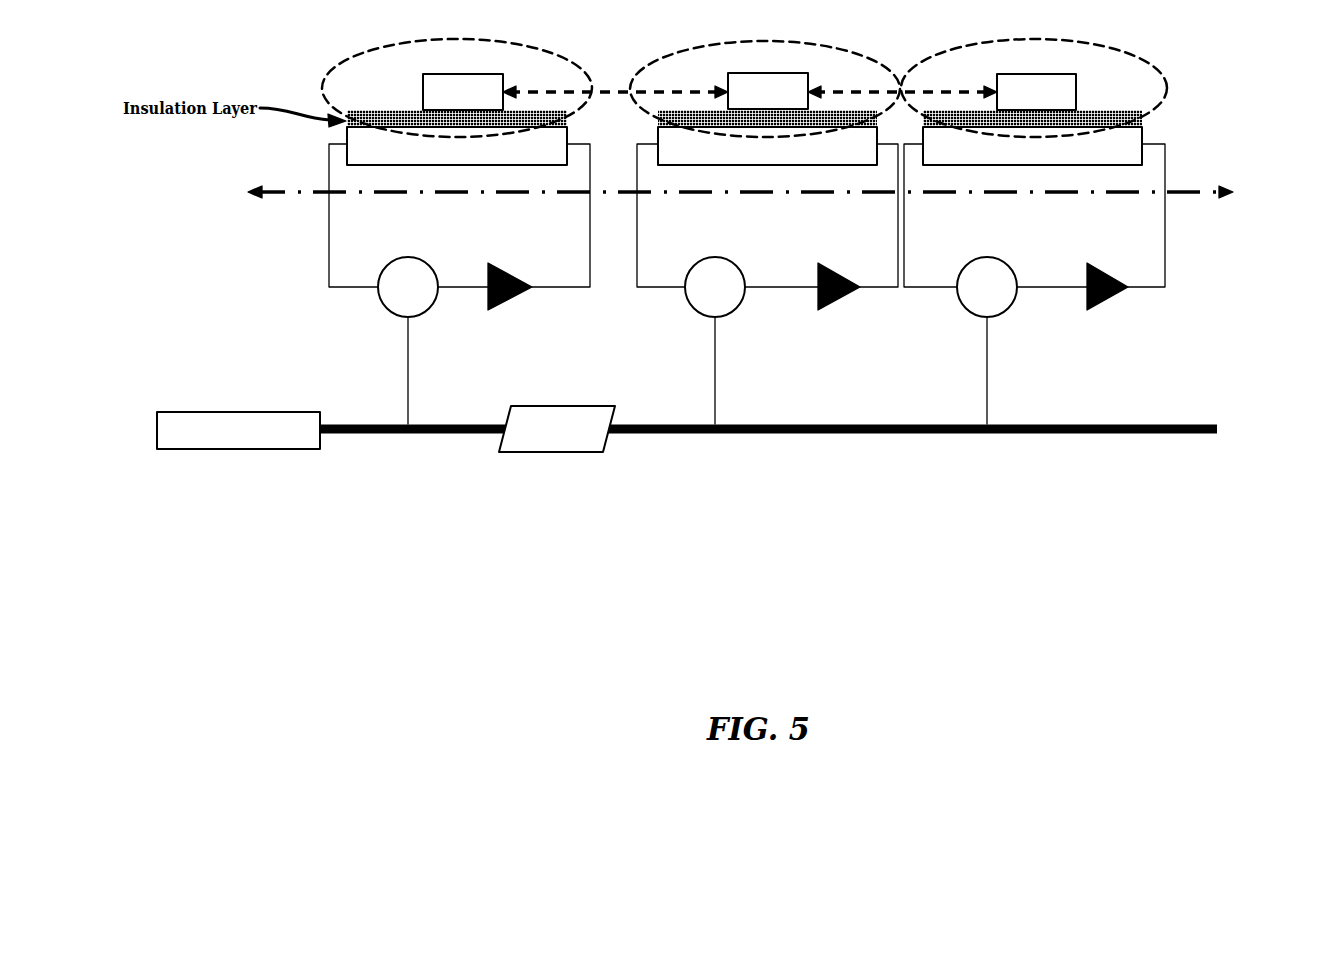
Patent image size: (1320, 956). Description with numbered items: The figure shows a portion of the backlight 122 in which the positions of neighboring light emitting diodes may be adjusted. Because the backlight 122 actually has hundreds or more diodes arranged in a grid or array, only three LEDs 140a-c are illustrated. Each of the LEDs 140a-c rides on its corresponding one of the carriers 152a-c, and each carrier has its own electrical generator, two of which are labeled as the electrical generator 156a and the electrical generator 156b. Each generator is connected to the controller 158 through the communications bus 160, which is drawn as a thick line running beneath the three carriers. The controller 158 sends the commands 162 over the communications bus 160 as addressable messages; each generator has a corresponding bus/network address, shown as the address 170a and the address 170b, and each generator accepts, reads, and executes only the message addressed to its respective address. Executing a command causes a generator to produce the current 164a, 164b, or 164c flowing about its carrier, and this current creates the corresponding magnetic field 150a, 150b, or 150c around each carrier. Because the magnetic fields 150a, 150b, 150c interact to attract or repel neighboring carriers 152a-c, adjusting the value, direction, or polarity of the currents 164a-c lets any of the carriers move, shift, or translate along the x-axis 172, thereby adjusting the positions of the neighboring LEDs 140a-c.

The backlight 122 is at (272, 585).
The LEDs 140a-c is at (1178, 74).
The magnetic field 150a is at (433, 213).
The magnetic field 150b is at (740, 213).
The magnetic field 150c is at (972, 313).
The carriers 152a-c is at (1178, 127).
The electrical generator 156a is at (371, 311).
The electrical generator 156b is at (676, 309).
The bus/network address 170a is at (393, 313).
The bus/network address 170b is at (700, 313).
The current 164a is at (506, 305).
The current 164b is at (826, 306).
The current 164c is at (1098, 306).
The controller 158 is at (183, 411).
The communications bus 160 is at (1217, 426).
The commands 162 is at (538, 453).
The x-axis 172 is at (208, 200).